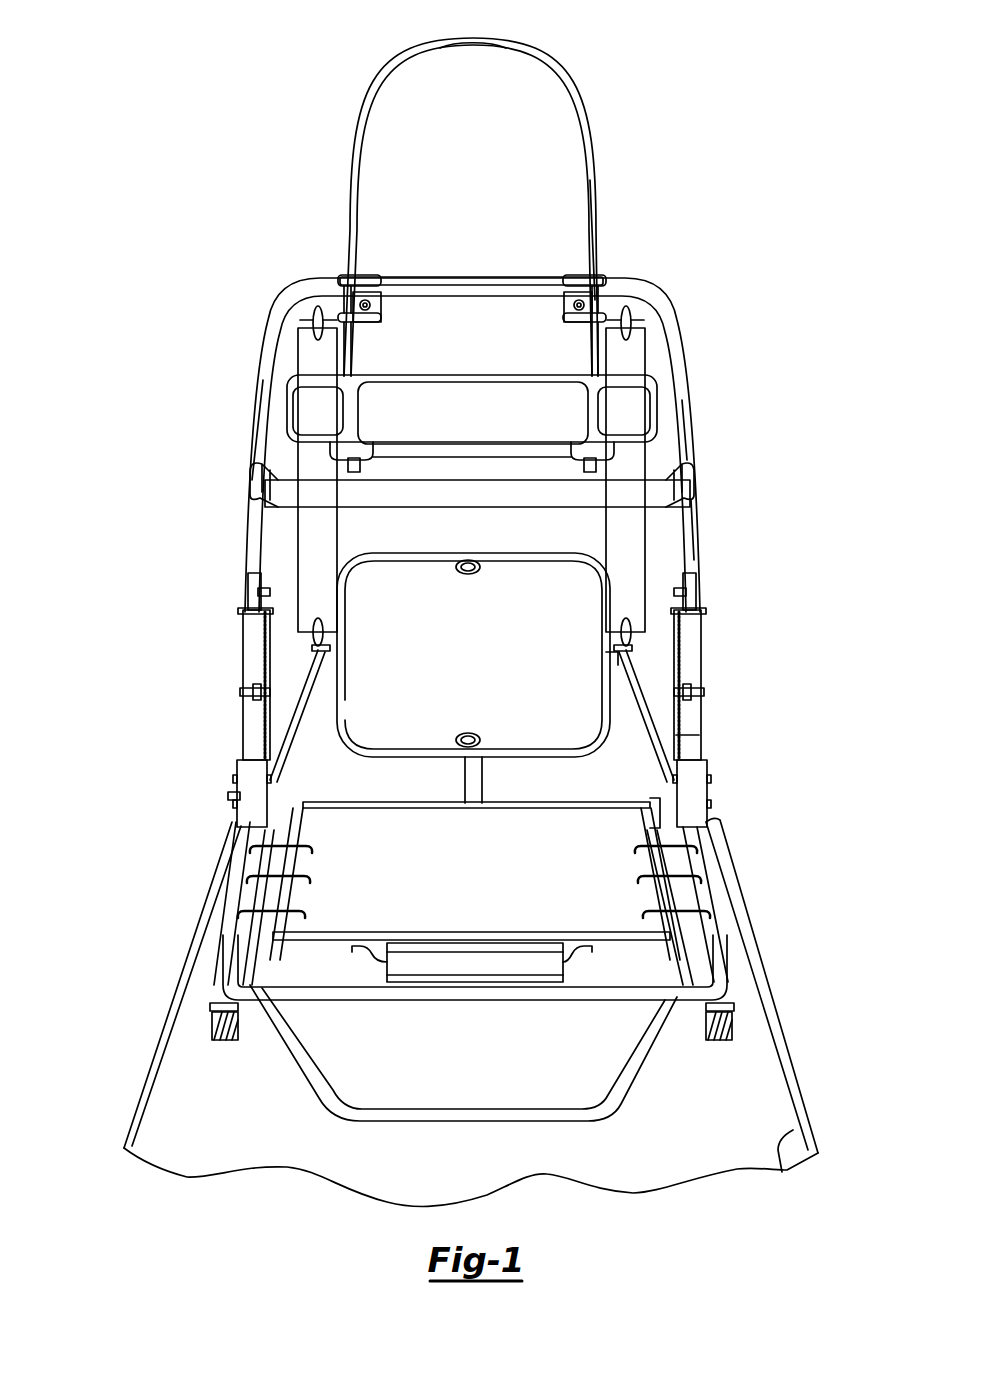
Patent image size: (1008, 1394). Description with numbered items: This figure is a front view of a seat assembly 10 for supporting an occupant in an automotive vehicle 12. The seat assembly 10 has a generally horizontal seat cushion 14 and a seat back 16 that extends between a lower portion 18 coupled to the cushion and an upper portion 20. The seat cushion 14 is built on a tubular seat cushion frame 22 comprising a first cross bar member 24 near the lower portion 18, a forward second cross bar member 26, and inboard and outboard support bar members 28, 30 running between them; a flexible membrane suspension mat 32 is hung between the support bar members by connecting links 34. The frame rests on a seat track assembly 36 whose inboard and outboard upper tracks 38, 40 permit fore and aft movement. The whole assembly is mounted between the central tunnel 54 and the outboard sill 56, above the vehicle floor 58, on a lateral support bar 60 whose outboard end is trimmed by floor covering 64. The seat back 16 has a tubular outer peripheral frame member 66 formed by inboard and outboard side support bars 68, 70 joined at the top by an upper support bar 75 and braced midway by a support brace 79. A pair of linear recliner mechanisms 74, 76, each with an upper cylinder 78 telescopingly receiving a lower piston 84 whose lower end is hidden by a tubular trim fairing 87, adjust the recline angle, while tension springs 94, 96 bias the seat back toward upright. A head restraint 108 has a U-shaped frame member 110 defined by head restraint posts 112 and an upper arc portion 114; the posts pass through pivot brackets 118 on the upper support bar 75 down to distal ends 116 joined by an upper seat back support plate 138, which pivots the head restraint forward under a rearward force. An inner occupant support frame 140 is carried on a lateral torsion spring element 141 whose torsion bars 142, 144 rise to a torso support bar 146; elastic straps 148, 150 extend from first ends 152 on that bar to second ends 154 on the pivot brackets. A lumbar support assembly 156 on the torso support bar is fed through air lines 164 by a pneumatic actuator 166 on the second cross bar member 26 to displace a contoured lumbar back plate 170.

The seat assembly 10 is at (722, 178).
The automotive vehicle 12 is at (505, 1012).
The seat cushion 14 is at (474, 903).
The seat back 16 is at (492, 434).
The lower portion 18 is at (228, 794).
The upper portion 20 is at (300, 292).
The seat cushion frame 22 is at (230, 960).
The first cross bar member 24 is at (655, 800).
The second cross bar member 26 is at (470, 993).
The inboard support bar member 28 is at (240, 895).
The outboard support bar member 30 is at (717, 947).
The flexible membrane suspension mat 32 is at (492, 901).
The connecting links 34 is at (260, 855).
The seat track assembly 36 is at (728, 1042).
The inboard upper track 38 is at (212, 1010).
The outboard upper track 40 is at (697, 1077).
The central tunnel 54 is at (148, 1085).
The outboard sill 56 is at (796, 1130).
The vehicle floor 58 is at (493, 1167).
The support bar 60 is at (335, 1005).
The floor covering 64 is at (745, 977).
The outer peripheral frame member 66 is at (695, 505).
The inboard side support bar 68 is at (262, 373).
The outboard side support bar 70 is at (683, 445).
The linear recliner mechanism 74 is at (469, 666).
The upper support bar 75 is at (515, 276).
The linear recliner mechanism 76 is at (726, 666).
The upper cylinder 78 is at (692, 700).
The support brace 79 is at (410, 492).
The lower piston 84 is at (695, 748).
The tubular trim fairing 87 is at (245, 790).
The tension spring 94 is at (265, 660).
The tension spring 96 is at (680, 595).
The head restraint 108 is at (562, 70).
The U-shaped frame member 110 is at (585, 147).
The head restraint posts 112 is at (350, 360).
The upper arc portion 114 is at (403, 62).
The distal end 116 is at (360, 460).
The pivot bracket 118 is at (372, 275).
The upper seat back support plate 138 is at (478, 392).
The inner occupant support frame 140 is at (427, 664).
The lateral torsion spring element 141 is at (292, 782).
The torsion bar 142 is at (300, 706).
The torsion bar 144 is at (640, 692).
The torso support bar 146 is at (612, 658).
The elastic strap 148 is at (303, 457).
The elastic strap 150 is at (615, 518).
The first end 152 is at (326, 648).
The second end 154 is at (312, 323).
The lumbar support assembly 156 is at (475, 915).
The air lines 164 is at (480, 790).
The pneumatic actuator 166 is at (493, 985).
The lumbar back plate 170 is at (486, 641).